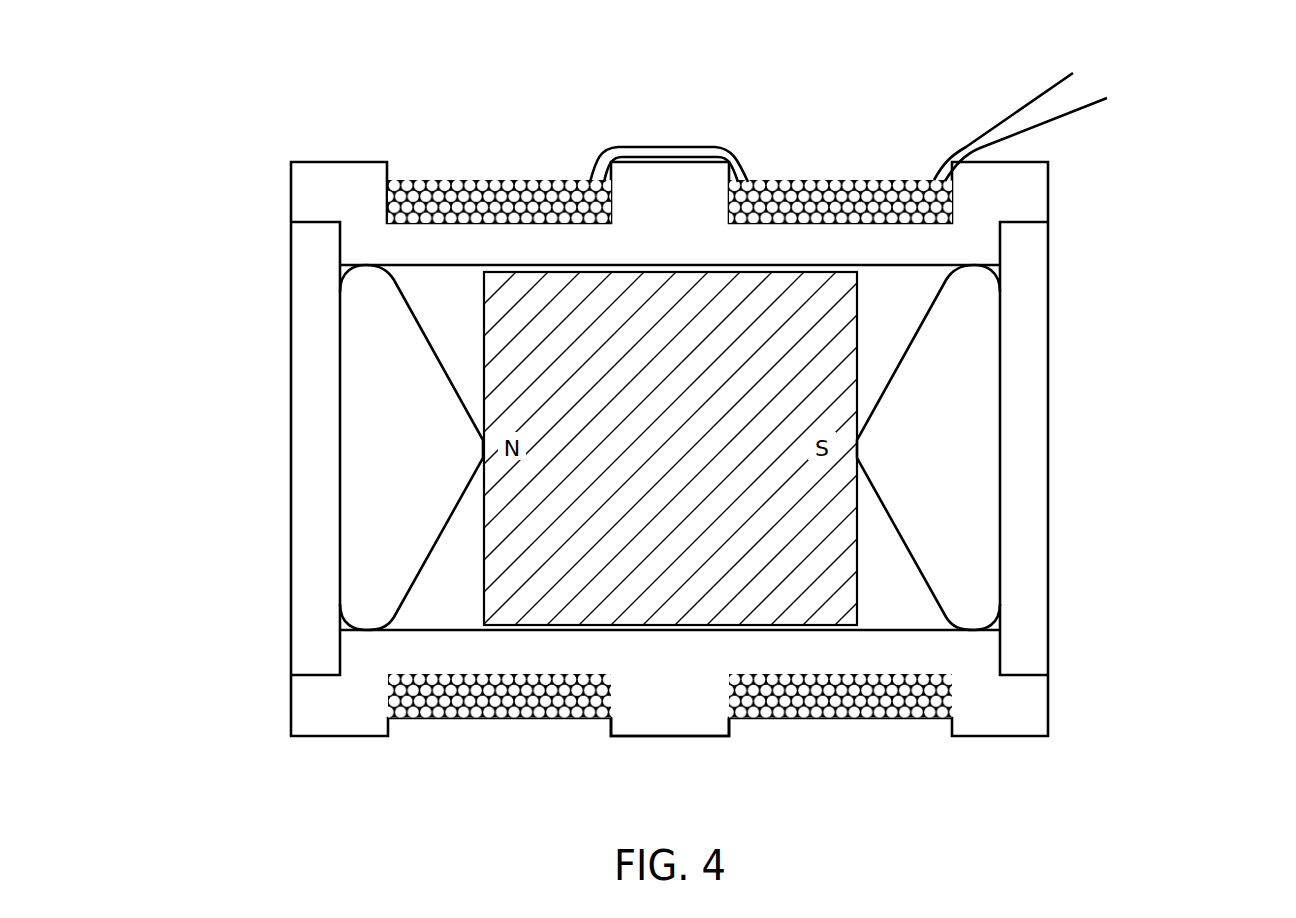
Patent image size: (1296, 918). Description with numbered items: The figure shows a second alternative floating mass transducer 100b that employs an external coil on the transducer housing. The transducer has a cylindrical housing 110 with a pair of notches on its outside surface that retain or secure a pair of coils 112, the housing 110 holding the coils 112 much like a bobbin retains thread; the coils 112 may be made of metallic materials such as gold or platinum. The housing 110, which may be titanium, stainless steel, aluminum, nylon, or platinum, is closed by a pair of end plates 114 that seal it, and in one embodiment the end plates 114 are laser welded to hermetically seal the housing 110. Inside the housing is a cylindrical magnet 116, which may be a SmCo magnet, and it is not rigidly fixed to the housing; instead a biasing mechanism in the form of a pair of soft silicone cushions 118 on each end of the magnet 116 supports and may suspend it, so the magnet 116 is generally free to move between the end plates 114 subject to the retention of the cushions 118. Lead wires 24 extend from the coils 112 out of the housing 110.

The lead wires 24 is at (1042, 78).
The floating mass transducer 100b is at (1142, 755).
The housing 110 is at (1023, 193).
The coils 112 is at (478, 182).
The end plates 114 is at (306, 408).
The magnet 116 is at (668, 728).
The silicone cushions 118 is at (360, 560).